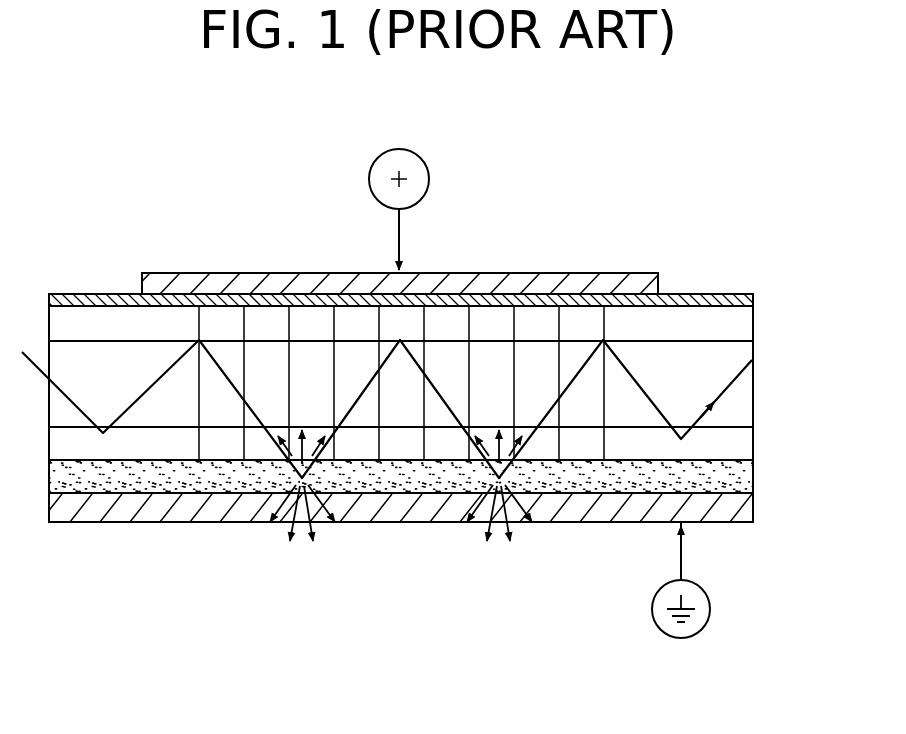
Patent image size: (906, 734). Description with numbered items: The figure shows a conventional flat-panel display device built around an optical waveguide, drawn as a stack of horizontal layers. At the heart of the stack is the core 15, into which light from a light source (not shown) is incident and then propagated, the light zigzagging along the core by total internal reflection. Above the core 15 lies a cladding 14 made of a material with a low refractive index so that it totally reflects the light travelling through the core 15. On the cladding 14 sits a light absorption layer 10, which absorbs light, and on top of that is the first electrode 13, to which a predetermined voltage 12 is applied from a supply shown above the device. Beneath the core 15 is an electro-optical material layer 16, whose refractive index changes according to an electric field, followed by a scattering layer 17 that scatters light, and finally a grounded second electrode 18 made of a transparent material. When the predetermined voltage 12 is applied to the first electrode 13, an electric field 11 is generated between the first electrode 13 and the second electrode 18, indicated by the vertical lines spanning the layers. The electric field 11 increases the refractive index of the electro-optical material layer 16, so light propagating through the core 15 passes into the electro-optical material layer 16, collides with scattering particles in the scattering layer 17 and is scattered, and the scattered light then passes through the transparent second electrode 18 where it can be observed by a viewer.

The light absorption layer 10 is at (698, 296).
The electric field 11 is at (197, 393).
The predetermined voltage 12 is at (417, 180).
The first electrode 13 is at (600, 272).
The cladding 14 is at (737, 320).
The core 15 is at (738, 395).
The electro-optical material layer 16 is at (737, 442).
The scattering layer 17 is at (737, 478).
The second electrode 18 is at (737, 510).